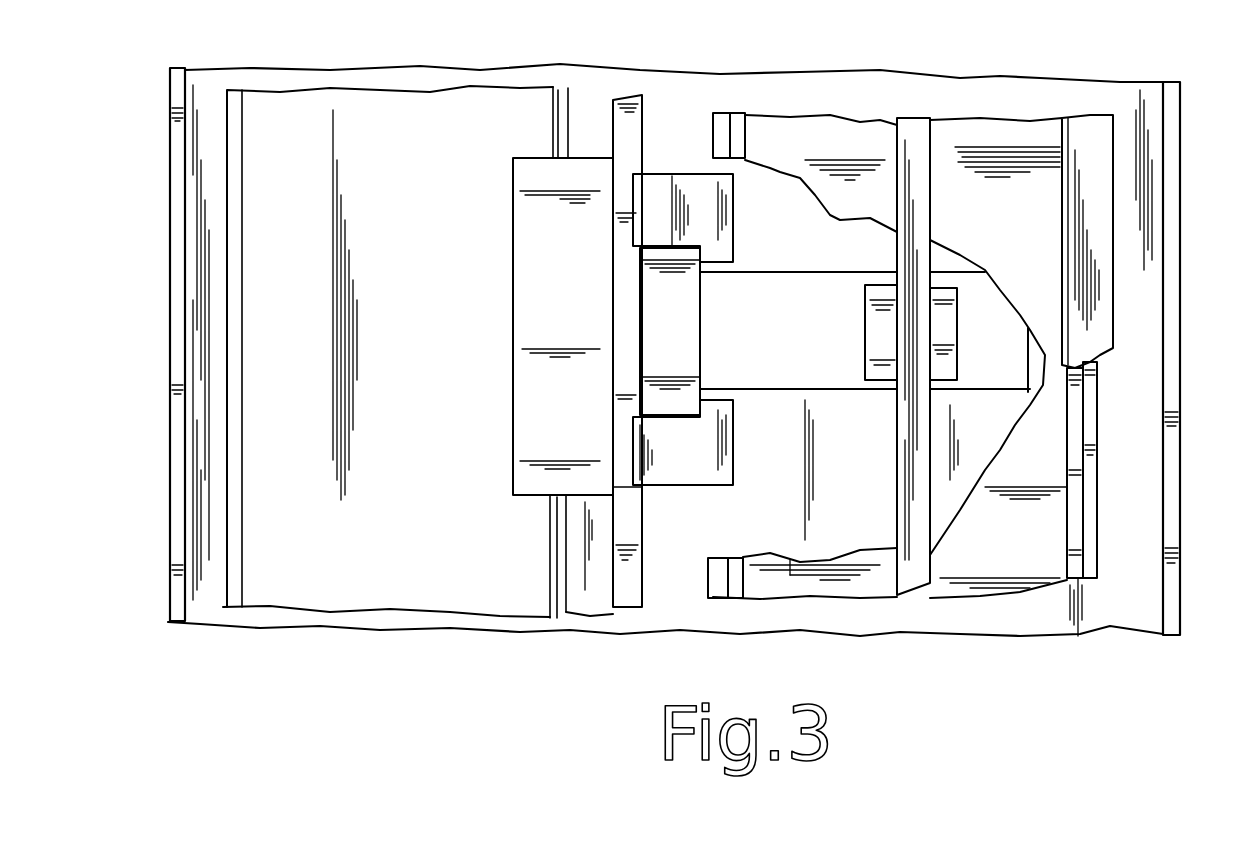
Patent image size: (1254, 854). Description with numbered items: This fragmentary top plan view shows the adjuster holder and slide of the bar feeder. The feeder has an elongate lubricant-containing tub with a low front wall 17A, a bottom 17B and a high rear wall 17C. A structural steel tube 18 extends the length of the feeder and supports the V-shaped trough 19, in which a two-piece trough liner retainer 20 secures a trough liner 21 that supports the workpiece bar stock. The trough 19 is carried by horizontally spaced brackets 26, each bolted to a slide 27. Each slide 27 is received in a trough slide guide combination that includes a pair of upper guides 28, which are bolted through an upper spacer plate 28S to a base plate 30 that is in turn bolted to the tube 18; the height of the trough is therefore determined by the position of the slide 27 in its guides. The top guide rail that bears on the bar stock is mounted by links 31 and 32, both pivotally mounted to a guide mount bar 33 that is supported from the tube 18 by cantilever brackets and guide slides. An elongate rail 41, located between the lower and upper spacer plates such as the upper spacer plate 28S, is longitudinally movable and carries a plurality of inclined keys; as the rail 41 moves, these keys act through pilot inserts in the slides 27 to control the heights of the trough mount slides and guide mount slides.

The low front wall 17A is at (1180, 537).
The bottom 17B is at (185, 332).
The high rear wall 17C is at (172, 226).
The structural steel tube 18 is at (408, 104).
The trough 19 is at (1094, 493).
The trough liner retainer 20 is at (1105, 334).
The trough liner 21 is at (1078, 437).
The bracket 26 is at (838, 284).
The slide 27 is at (698, 358).
The upper guide 28 is at (732, 232).
The upper spacer plate 28S is at (622, 487).
The base plate 30 is at (593, 176).
The link 31 is at (870, 323).
The link 32 is at (955, 331).
The guide mount bar 33 is at (922, 155).
The rail 41 is at (632, 149).